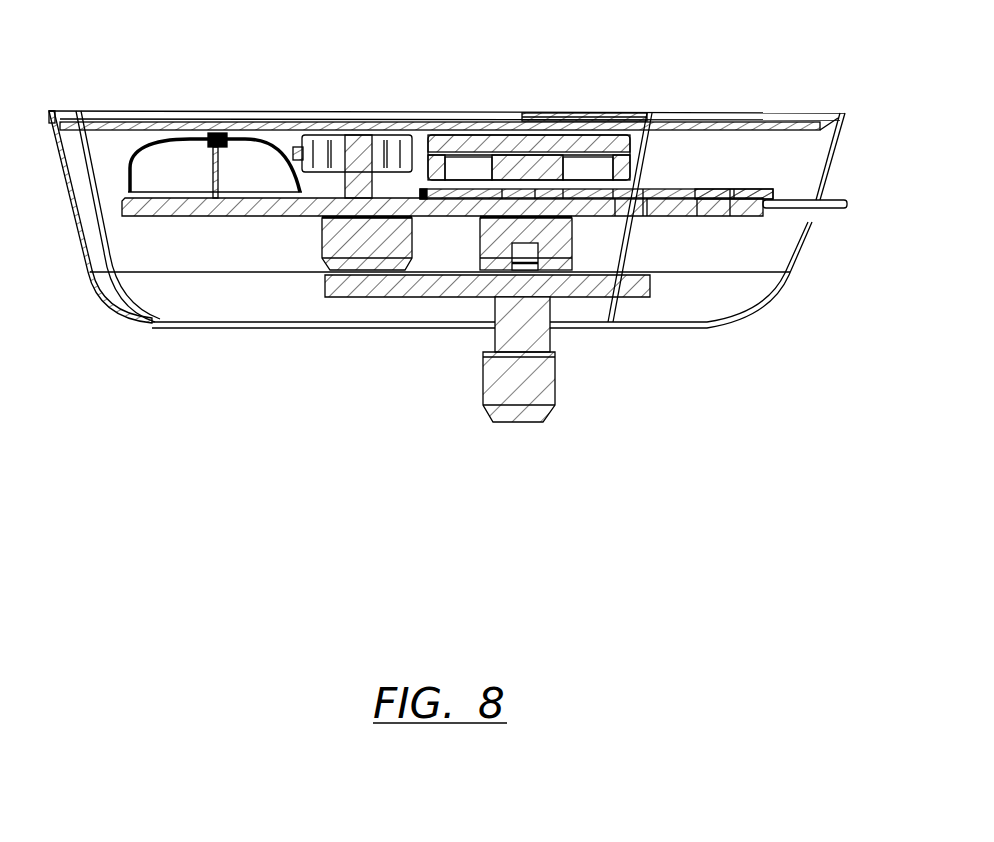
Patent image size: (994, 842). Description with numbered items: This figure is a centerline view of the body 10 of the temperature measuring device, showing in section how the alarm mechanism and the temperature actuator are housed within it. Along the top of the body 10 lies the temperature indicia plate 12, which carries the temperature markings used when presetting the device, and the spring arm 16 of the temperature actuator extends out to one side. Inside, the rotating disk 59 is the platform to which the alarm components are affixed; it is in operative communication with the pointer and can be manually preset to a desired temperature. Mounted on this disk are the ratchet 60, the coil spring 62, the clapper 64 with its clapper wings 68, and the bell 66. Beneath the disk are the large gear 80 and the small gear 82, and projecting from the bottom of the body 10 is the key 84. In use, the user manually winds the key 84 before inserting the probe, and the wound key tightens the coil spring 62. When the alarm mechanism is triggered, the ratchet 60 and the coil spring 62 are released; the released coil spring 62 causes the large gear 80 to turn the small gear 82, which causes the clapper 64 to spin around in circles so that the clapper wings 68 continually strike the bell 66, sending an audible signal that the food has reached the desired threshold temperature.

The body 10 is at (800, 262).
The temperature indicia plate 12 is at (764, 128).
The spring arm 16 is at (840, 202).
The rotating disk 59 is at (163, 207).
The ratchet 60 is at (643, 118).
The coil spring 62 is at (537, 150).
The clapper 64 is at (377, 135).
The bell 66 is at (172, 137).
The clapper wings 68 is at (317, 143).
The large gear 80 is at (578, 287).
The small gear 82 is at (342, 287).
The key 84 is at (497, 422).